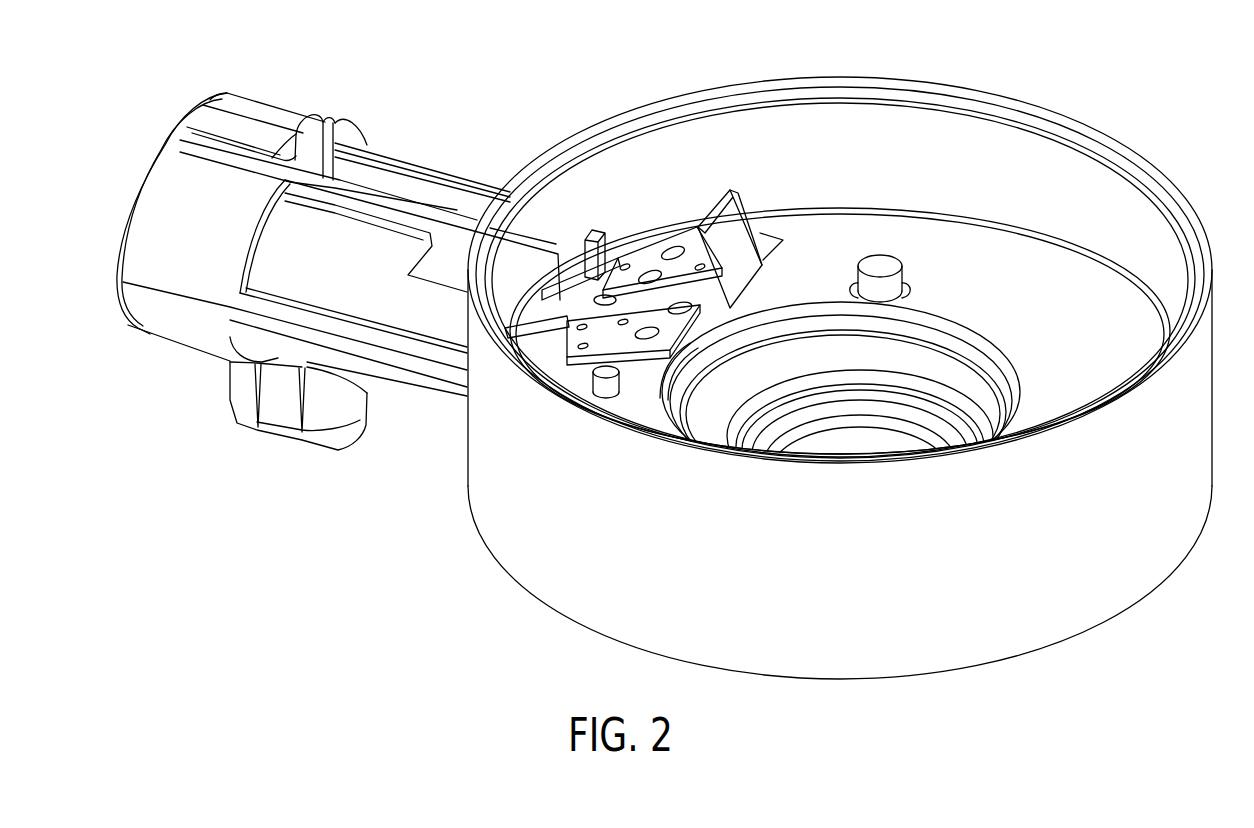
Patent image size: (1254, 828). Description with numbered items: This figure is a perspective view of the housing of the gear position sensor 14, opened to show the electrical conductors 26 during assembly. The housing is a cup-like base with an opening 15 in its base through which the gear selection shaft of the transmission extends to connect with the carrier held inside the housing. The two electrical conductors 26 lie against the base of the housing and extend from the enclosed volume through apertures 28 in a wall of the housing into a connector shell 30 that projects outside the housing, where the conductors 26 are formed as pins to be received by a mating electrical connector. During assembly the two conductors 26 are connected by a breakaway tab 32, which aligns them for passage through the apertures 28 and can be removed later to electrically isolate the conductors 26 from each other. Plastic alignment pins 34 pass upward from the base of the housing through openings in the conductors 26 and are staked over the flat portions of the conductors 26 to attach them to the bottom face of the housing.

The gear position sensor 14 is at (1134, 93).
The opening 15 is at (809, 449).
The electrical conductors 26 is at (557, 256).
The apertures 28 is at (508, 321).
The connector shell 30 is at (176, 320).
The breakaway tab 32 is at (732, 222).
The plastic alignment pins 34 is at (598, 386).